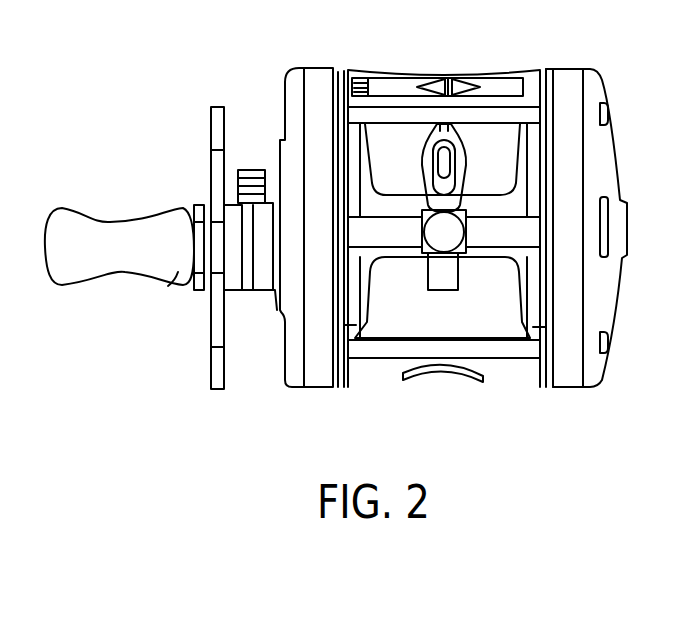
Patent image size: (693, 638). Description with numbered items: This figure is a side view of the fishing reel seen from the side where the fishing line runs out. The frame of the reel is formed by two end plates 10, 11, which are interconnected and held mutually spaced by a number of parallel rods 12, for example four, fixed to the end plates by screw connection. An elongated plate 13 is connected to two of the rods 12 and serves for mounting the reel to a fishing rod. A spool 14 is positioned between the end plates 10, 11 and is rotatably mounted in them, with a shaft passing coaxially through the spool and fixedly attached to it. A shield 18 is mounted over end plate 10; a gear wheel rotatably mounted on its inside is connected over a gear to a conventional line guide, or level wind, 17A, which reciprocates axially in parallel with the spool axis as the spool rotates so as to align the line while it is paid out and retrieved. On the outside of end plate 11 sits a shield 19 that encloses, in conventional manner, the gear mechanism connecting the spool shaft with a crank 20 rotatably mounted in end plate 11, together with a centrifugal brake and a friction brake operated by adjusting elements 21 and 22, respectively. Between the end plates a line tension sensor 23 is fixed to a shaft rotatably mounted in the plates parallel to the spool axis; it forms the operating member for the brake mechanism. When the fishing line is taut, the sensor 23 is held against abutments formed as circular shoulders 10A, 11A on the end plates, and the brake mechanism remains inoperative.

The end plate 10 is at (550, 69).
The circular shoulder 10A is at (533, 327).
The end plate 11 is at (338, 70).
The circular shoulder 11A is at (355, 325).
The parallel rods 12 is at (372, 352).
The elongated plate 13 is at (423, 372).
The spool 14 is at (515, 278).
The line guide (level wind) 17A is at (443, 218).
The shield 18 is at (612, 157).
The shield 19 is at (290, 87).
The crank 20 is at (178, 272).
The adjusting element 21 is at (250, 171).
The adjusting element 22 is at (215, 357).
The line tension sensor 23 is at (368, 71).